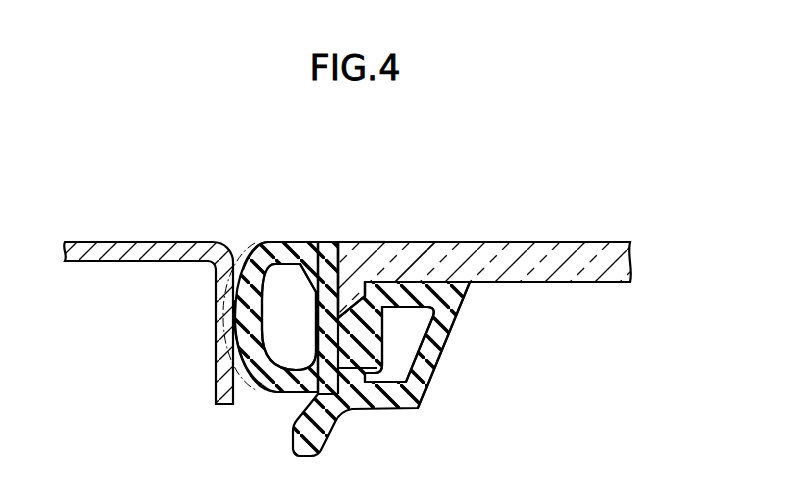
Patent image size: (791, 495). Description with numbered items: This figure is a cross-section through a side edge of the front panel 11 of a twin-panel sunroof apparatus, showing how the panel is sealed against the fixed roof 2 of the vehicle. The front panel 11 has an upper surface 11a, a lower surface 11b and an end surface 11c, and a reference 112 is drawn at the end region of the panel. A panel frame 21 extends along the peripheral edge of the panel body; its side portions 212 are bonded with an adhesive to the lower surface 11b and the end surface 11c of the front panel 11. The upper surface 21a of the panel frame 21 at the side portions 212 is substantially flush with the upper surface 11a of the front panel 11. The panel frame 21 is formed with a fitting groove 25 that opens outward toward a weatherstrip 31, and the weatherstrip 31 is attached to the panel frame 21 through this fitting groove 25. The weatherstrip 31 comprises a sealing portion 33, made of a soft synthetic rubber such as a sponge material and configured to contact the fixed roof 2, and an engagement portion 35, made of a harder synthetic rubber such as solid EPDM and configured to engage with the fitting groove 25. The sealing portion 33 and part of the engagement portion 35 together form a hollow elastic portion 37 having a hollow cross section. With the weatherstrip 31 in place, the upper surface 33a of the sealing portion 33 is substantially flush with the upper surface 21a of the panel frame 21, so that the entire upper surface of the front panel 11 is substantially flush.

The fixed roof 2 is at (136, 242).
The front panel 11 is at (475, 241).
The upper surface of the front panel 11a is at (537, 240).
The lower surface of the front panel 11b is at (416, 266).
The end surface of the front panel 11c is at (368, 242).
The end edge of second panel 112 is at (373, 236).
The panel frame 21 is at (434, 391).
The upper surface of the panel frame 21a is at (347, 239).
The side portions of the panel frame 212 is at (462, 334).
The fitting groove 25 is at (410, 348).
The weatherstrip 31 is at (302, 241).
The sealing portion 33 is at (260, 372).
The upper surface of the sealing portion 33a is at (273, 239).
The engagement portion 35 is at (324, 370).
The hollow elastic portion 37 is at (272, 317).